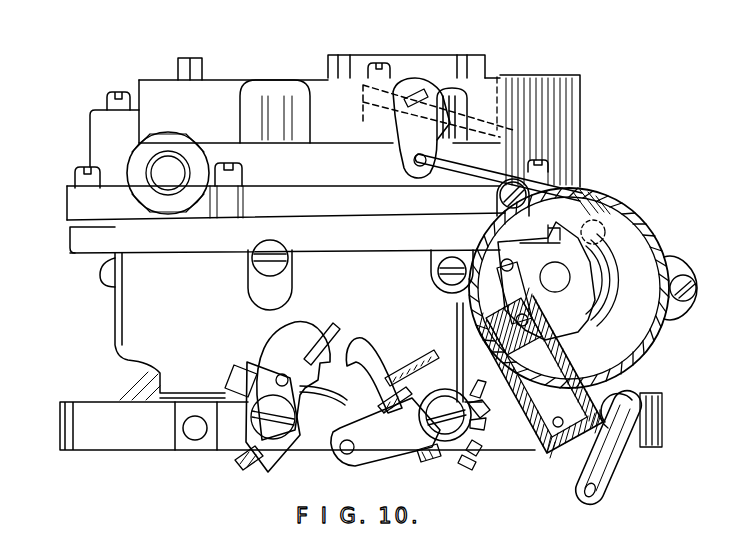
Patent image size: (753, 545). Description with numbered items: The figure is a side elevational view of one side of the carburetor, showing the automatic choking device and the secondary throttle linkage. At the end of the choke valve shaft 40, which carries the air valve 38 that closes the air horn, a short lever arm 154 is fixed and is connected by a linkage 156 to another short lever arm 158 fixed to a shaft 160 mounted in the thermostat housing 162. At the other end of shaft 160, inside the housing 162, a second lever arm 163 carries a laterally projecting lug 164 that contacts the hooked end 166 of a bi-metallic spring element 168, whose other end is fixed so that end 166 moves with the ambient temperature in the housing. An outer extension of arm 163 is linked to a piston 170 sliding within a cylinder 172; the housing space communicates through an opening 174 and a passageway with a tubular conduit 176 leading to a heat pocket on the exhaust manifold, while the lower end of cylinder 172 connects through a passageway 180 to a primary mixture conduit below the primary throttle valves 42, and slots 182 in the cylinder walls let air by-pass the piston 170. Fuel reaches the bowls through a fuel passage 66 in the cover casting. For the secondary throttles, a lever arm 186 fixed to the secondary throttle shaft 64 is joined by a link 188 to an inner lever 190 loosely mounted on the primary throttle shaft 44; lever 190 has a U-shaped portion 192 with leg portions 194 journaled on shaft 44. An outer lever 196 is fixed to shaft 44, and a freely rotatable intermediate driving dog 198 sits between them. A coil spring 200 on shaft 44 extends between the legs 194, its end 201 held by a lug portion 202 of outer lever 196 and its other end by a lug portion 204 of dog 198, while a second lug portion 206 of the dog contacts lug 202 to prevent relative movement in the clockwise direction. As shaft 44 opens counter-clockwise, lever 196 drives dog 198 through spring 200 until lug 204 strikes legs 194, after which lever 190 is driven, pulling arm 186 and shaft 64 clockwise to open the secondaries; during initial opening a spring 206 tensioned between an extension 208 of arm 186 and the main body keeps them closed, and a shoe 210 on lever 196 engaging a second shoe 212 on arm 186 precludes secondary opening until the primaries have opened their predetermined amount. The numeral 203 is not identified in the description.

The air valve 38 is at (502, 78).
The choke valve shaft 40 is at (418, 96).
The primary throttle valves 42 is at (150, 182).
The primary throttle shaft 44 is at (440, 433).
The secondary throttle shaft 64 is at (275, 452).
The fuel passage 66 is at (156, 161).
The short lever arm 154 is at (403, 145).
The linkage 156 is at (445, 168).
The short lever arm 158 is at (612, 216).
The shaft 160 is at (572, 283).
The thermostat housing 162 is at (610, 203).
The second lever arm 163 is at (512, 243).
The laterally projecting lug 164 is at (547, 233).
The hooked end 166 is at (498, 208).
The bi-metallic spring element 168 is at (621, 306).
The piston 170 is at (505, 347).
The cylinder 172 is at (576, 386).
The opening 174 is at (644, 350).
The tubular conduit 176 is at (622, 466).
The passageway 180 is at (573, 444).
The slots 182 is at (552, 371).
The lever arm 186 is at (278, 342).
The link 188 is at (335, 388).
The inner lever 190 is at (362, 460).
The U-shaped portion 192 is at (437, 355).
The leg portions 194 is at (433, 358).
The outer lever 196 is at (410, 367).
The intermediate driving dog 198 is at (360, 426).
The coil spring 200 is at (484, 425).
The end of coil spring 201 is at (480, 455).
The laterally extending lug portion 202 is at (483, 457).
The spring coil 203 is at (488, 405).
The laterally extending lug portion 204 is at (482, 399).
The lug portion / spring 206 is at (243, 437).
The extension 208 is at (243, 468).
The shoe 210 is at (355, 335).
The second shoe 212 is at (300, 328).